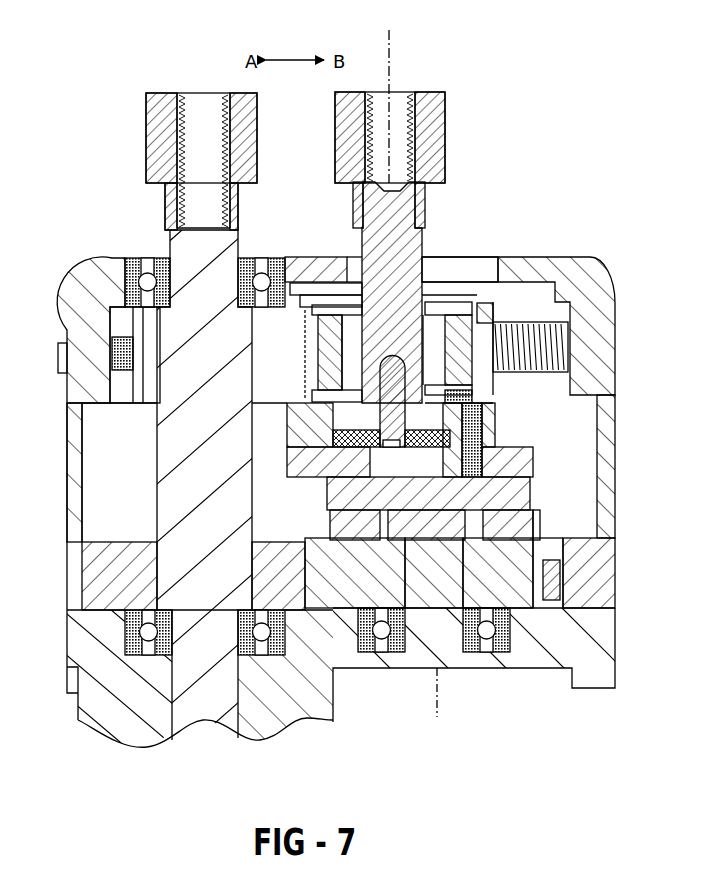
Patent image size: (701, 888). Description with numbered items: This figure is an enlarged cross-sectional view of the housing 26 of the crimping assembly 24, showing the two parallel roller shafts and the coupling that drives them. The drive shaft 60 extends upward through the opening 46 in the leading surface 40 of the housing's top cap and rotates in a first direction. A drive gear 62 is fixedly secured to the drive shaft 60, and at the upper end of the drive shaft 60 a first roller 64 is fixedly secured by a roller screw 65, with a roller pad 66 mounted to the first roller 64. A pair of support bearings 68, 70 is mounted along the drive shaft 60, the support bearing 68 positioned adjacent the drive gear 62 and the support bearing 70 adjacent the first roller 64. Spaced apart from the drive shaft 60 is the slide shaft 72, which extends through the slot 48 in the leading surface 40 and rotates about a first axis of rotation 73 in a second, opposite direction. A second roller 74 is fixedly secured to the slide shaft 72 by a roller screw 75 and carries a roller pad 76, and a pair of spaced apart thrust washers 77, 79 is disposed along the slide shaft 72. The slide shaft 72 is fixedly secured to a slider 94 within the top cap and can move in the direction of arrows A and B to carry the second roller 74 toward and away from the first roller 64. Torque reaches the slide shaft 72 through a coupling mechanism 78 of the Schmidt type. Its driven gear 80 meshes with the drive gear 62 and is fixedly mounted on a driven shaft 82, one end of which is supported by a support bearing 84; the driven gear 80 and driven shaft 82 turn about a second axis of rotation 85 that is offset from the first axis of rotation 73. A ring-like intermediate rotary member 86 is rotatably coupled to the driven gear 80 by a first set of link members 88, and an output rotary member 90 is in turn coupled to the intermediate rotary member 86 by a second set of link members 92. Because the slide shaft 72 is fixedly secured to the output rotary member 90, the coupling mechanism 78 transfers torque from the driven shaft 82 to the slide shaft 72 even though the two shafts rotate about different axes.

The crimping assembly 24 is at (71, 234).
The housing 26 is at (621, 298).
The leading surface 40 is at (300, 258).
The opening 46 is at (172, 300).
The slot 48 is at (450, 263).
The drive shaft 60 is at (170, 518).
The drive gear 62 is at (110, 588).
The first roller 64 is at (165, 207).
The roller screw 65 is at (190, 116).
The roller pad 66 is at (146, 124).
The support bearing 68 is at (127, 625).
The support bearing 70 is at (122, 273).
The slide shaft 72 is at (422, 243).
The first axis of rotation 73 is at (392, 50).
The second roller 74 is at (428, 200).
The roller screw 75 is at (386, 105).
The roller pad 76 is at (446, 100).
The thrust washer 77 is at (443, 307).
The coupling mechanism 78 is at (536, 458).
The thrust washer 79 is at (495, 388).
The driven gear 80 is at (465, 585).
The driven shaft 82 is at (535, 610).
The support bearing 84 is at (498, 652).
The second axis of rotation 85 is at (437, 686).
The intermediate rotary member 86 is at (420, 507).
The first set of link members 88 is at (333, 537).
The output rotary member 90 is at (495, 420).
The second set of link members 92 is at (317, 453).
The slider 94 is at (145, 320).